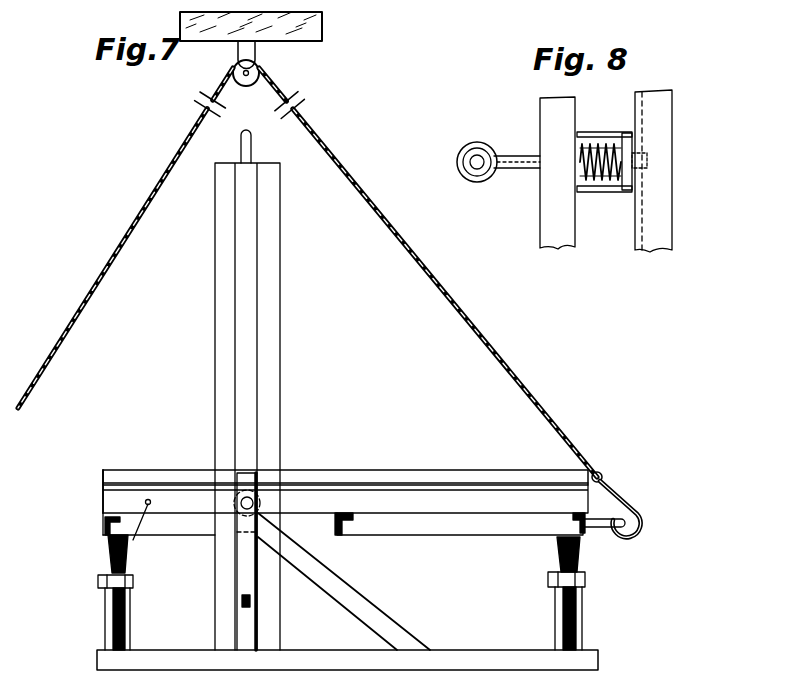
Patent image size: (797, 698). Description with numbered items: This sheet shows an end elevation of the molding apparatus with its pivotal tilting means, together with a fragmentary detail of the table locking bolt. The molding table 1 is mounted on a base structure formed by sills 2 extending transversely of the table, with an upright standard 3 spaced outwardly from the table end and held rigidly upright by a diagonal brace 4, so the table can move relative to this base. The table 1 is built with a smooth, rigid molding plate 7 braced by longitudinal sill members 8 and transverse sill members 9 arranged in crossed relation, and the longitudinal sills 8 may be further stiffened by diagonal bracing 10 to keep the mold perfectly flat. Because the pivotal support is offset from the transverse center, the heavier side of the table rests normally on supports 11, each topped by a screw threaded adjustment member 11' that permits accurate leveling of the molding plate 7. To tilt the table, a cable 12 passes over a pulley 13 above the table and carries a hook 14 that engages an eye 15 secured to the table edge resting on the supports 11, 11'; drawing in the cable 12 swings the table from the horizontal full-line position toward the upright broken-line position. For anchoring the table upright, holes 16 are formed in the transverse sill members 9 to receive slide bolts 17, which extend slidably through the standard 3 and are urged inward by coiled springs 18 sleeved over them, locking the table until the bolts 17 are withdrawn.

In FIG. 7, the molding table 1 is at (453, 461).
In FIG. 7, the sills 2 is at (133, 662).
In FIG. 7, the upright standards 3 is at (253, 633).
In FIG. 8, the upright standards 3 is at (548, 223).
In FIG. 7, the diagonal braces 4 is at (360, 601).
In FIG. 7, the molding plate 7 is at (103, 490).
In FIG. 7, the longitudinal sill members 8 is at (108, 537).
In FIG. 7, the transverse sill members 9 is at (106, 506).
In FIG. 8, the transverse sill members 9 is at (662, 218).
In FIG. 7, the diagonal bracing 10 is at (178, 532).
In FIG. 7, the supports 11 is at (336, 618).
In FIG. 7, the screw threaded adjustment member 11' is at (318, 572).
In FIG. 7, the cable 12 is at (418, 270).
In FIG. 7, the pulley 13 is at (262, 70).
In FIG. 7, the hook 14 is at (630, 506).
In FIG. 7, the eye 15 is at (642, 528).
In FIG. 7, the holes 16 is at (133, 540).
In FIG. 7, the slide bolts 17 is at (240, 603).
In FIG. 8, the slide bolts 17 is at (510, 170).
In FIG. 8, the coiled springs 18 is at (603, 180).